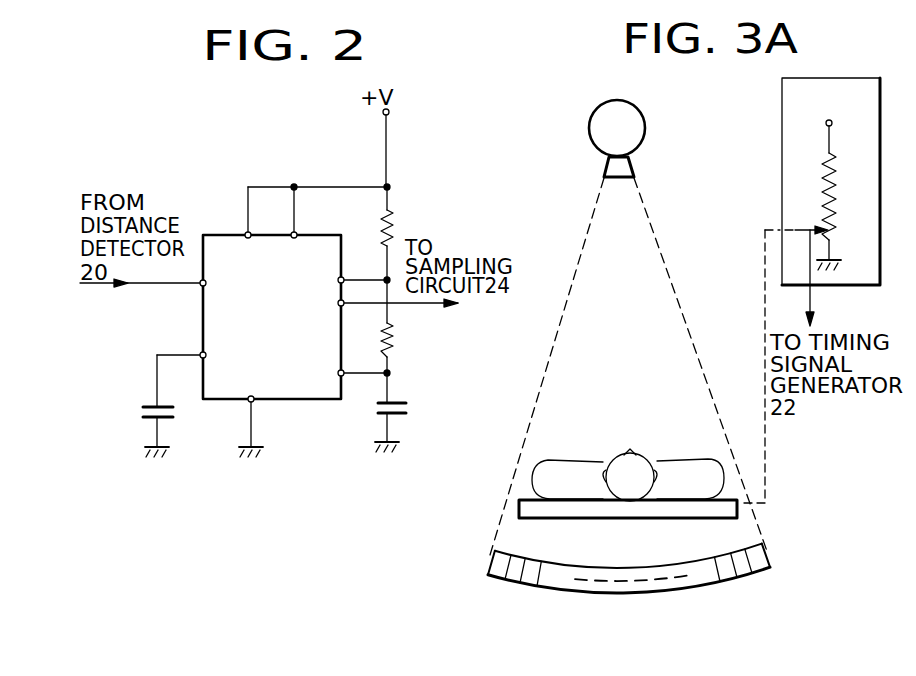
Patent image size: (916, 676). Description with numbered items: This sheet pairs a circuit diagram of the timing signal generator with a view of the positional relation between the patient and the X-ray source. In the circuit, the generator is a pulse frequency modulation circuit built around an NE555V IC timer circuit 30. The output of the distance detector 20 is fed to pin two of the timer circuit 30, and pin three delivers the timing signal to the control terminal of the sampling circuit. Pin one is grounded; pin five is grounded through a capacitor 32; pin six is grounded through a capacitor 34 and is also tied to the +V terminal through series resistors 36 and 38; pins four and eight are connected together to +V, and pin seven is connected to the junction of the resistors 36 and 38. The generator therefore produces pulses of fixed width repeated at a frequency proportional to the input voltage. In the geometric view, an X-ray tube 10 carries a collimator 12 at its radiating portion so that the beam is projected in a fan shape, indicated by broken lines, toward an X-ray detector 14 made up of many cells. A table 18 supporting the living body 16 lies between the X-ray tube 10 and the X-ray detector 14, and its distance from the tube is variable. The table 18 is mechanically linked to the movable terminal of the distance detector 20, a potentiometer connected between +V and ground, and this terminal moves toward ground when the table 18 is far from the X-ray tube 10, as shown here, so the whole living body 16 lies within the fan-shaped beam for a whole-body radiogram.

In FIG. 3A, the X-ray tube 10 is at (646, 125).
In FIG. 3A, the collimator 12 is at (636, 168).
In FIG. 3A, the X-ray detector 14 is at (635, 597).
In FIG. 3A, the living body 16 is at (670, 462).
In FIG. 3A, the table 18 is at (665, 512).
In FIG. 3A, the distance detector 20 is at (881, 146).
In FIG. 2, the IC timer circuit 30 is at (303, 400).
In FIG. 2, the capacitor 32 is at (177, 410).
In FIG. 2, the capacitor 34 is at (409, 408).
In FIG. 2, the resistor 36 is at (396, 340).
In FIG. 2, the resistor 38 is at (396, 228).